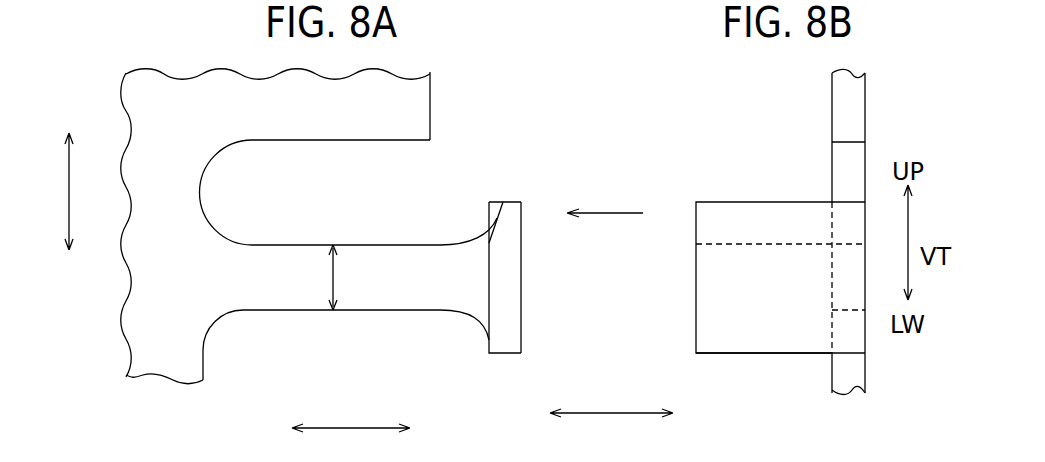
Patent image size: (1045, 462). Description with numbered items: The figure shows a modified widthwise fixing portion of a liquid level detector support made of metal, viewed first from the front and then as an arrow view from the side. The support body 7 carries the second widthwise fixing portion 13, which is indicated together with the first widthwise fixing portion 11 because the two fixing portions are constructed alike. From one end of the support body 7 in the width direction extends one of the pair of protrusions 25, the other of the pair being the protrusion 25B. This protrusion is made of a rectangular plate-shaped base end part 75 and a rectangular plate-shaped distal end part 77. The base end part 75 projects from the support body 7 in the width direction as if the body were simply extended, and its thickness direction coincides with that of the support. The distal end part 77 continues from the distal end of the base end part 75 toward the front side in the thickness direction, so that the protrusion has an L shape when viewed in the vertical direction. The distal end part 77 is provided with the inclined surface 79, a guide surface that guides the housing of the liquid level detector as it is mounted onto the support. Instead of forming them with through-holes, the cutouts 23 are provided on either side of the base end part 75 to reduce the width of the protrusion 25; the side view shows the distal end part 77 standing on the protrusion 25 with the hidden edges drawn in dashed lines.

In FIG. 8A, the support body 7 is at (158, 321).
In FIG. 8B, the support body 7 is at (865, 109).
In FIG. 8A, the first widthwise fixing portion 11 is at (373, 150).
In FIG. 8A, the second widthwise fixing portion 13 is at (478, 150).
In FIG. 8A, the cutouts 23 is at (355, 217).
In FIG. 8A, the protrusions 25 is at (551, 277).
In FIG. 8B, the protrusions 25 is at (776, 226).
In FIG. 8A, the protrusion 25B is at (521, 295).
In FIG. 8B, the protrusion 25B is at (720, 200).
In FIG. 8A, the base end part 75 is at (270, 313).
In FIG. 8A, the distal end part 77 is at (521, 250).
In FIG. 8B, the distal end part 77 is at (777, 355).
In FIG. 8A, the inclined surface 79 is at (492, 213).